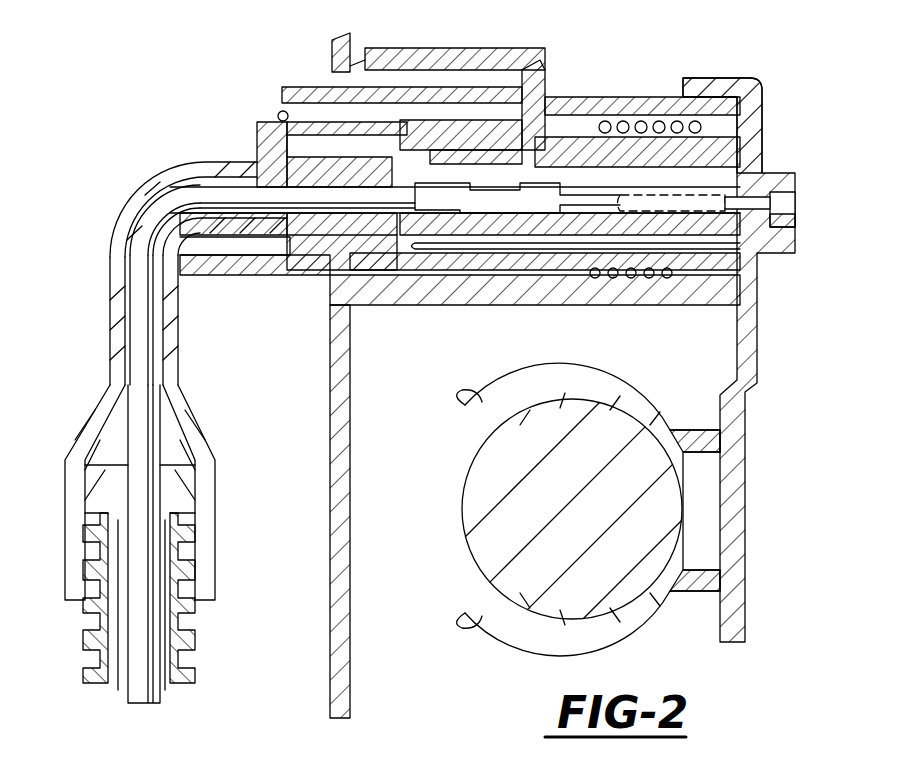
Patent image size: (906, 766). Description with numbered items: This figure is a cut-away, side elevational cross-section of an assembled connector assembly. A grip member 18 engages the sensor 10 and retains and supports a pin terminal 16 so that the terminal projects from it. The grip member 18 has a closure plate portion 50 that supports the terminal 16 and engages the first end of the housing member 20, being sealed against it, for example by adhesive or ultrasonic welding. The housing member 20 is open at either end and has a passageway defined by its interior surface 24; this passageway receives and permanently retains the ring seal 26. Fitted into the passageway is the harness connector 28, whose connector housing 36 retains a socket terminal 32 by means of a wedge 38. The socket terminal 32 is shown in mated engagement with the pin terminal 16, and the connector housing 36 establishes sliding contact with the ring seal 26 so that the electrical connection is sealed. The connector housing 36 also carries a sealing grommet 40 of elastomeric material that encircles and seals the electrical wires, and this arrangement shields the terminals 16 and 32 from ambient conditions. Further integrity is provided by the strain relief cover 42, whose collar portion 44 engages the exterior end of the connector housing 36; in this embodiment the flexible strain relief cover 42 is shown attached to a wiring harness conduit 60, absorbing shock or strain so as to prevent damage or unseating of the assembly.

The sensor 10 is at (483, 553).
The pin terminal 16 is at (796, 226).
The grip member 18 is at (757, 338).
The housing member 20 is at (408, 56).
The interior surface 24 is at (417, 302).
The ring seal 26 is at (738, 278).
The harness connector 28 is at (248, 122).
The socket terminal 32 is at (545, 216).
The connector housing 36 is at (476, 140).
The wedge 38 is at (620, 158).
The sealing grommet 40 is at (313, 160).
The strain relief cover 42 is at (146, 188).
The collar portion 44 is at (262, 284).
The closure plate portion 50 is at (763, 112).
The wiring harness conduit 60 is at (197, 622).